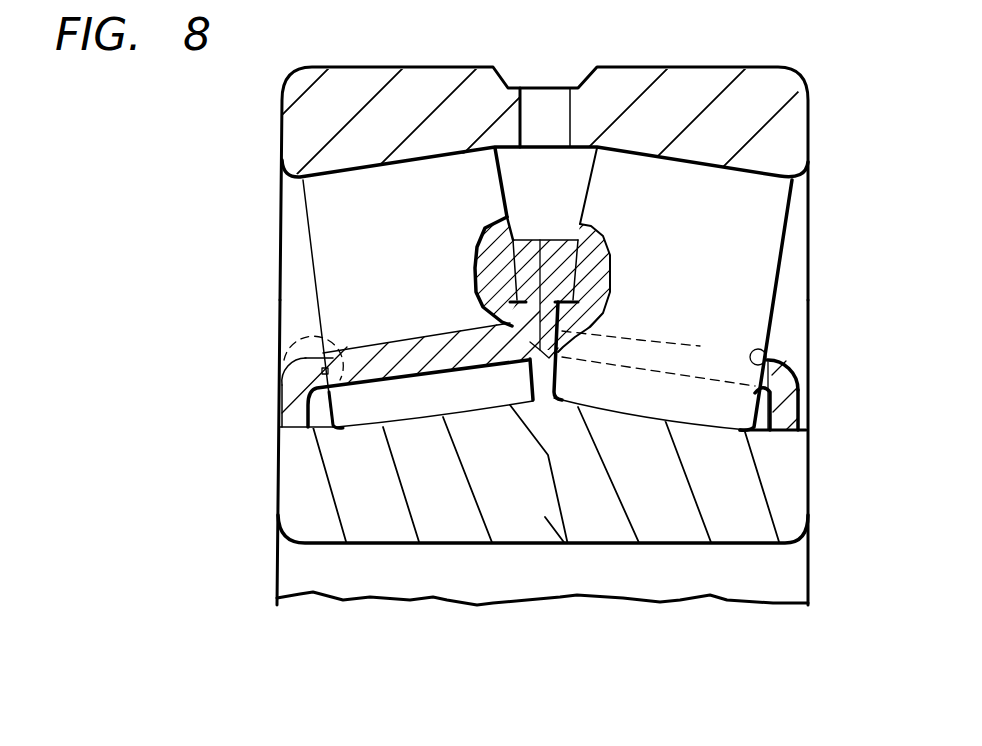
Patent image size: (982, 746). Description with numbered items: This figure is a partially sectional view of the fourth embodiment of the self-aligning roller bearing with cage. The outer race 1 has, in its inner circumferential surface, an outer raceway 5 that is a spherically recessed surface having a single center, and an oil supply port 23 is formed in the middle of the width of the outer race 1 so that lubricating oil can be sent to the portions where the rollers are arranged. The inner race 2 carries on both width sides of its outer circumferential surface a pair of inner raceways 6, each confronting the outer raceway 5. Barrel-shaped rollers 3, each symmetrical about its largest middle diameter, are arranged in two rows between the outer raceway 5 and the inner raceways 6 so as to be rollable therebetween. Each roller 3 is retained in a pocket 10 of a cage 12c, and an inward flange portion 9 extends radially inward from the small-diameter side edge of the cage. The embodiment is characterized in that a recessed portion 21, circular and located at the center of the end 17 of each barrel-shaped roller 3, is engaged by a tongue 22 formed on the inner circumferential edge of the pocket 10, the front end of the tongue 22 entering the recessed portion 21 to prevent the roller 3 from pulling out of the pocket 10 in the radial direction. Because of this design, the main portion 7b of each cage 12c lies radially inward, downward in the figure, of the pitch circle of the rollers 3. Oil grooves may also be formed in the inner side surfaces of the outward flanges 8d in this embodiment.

The outer race 1 is at (627, 80).
The inner race 2 is at (788, 503).
The barrel-shaped roller 3 is at (330, 276).
The outer raceway 5 is at (338, 175).
The inner raceway 6 is at (368, 422).
The main portion 7b is at (420, 367).
The outward flange 8d is at (523, 257).
The inward flange portion 9 is at (288, 412).
The pocket 10 is at (284, 350).
The cage 12c is at (284, 390).
The end of barrel-shaped roller 17 is at (497, 150).
The recessed portion 21 is at (502, 210).
The tongue 22 is at (520, 303).
The oil supply port 23 is at (520, 88).